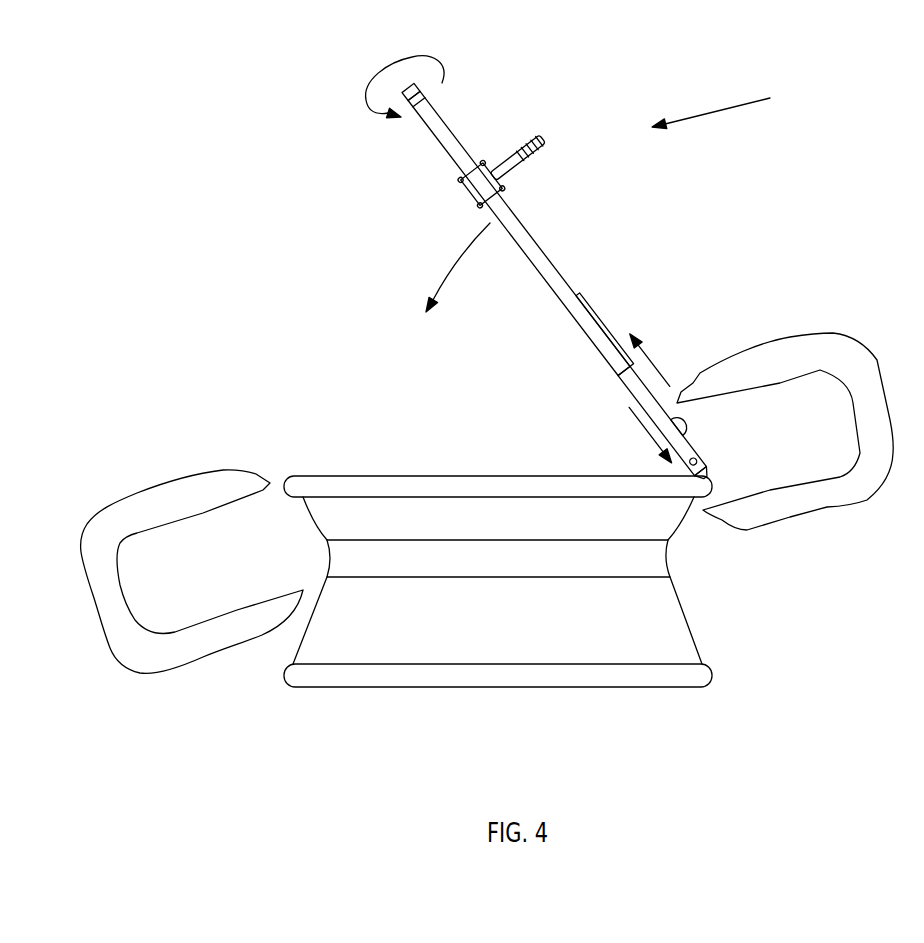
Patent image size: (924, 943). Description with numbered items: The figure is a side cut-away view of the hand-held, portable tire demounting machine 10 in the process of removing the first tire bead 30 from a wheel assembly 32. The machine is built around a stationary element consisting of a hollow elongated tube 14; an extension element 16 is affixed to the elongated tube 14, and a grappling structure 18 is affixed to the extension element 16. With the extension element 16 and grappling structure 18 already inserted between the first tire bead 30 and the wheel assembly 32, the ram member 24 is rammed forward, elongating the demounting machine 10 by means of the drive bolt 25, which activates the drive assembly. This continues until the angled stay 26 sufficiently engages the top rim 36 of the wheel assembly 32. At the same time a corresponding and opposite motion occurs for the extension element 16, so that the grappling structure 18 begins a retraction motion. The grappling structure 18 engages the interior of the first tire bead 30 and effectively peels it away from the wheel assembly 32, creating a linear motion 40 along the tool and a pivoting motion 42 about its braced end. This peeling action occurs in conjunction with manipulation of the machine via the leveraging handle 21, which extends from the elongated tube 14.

The hand-held, portable tire demounting machine 10 is at (727, 108).
The elongated tube 14 is at (540, 246).
The extension element 16 is at (603, 320).
The grappling structure 18 is at (695, 418).
The leveraging handle 21 is at (530, 132).
The ram member 24 is at (633, 393).
The drive bolt 25 is at (400, 93).
The angled stay 26 is at (713, 475).
The first tire bead 30 is at (700, 371).
The wheel assembly 32 is at (406, 557).
The top rim 36 is at (445, 476).
The linear motion 40 is at (653, 452).
The pivoting motion 42 is at (455, 258).